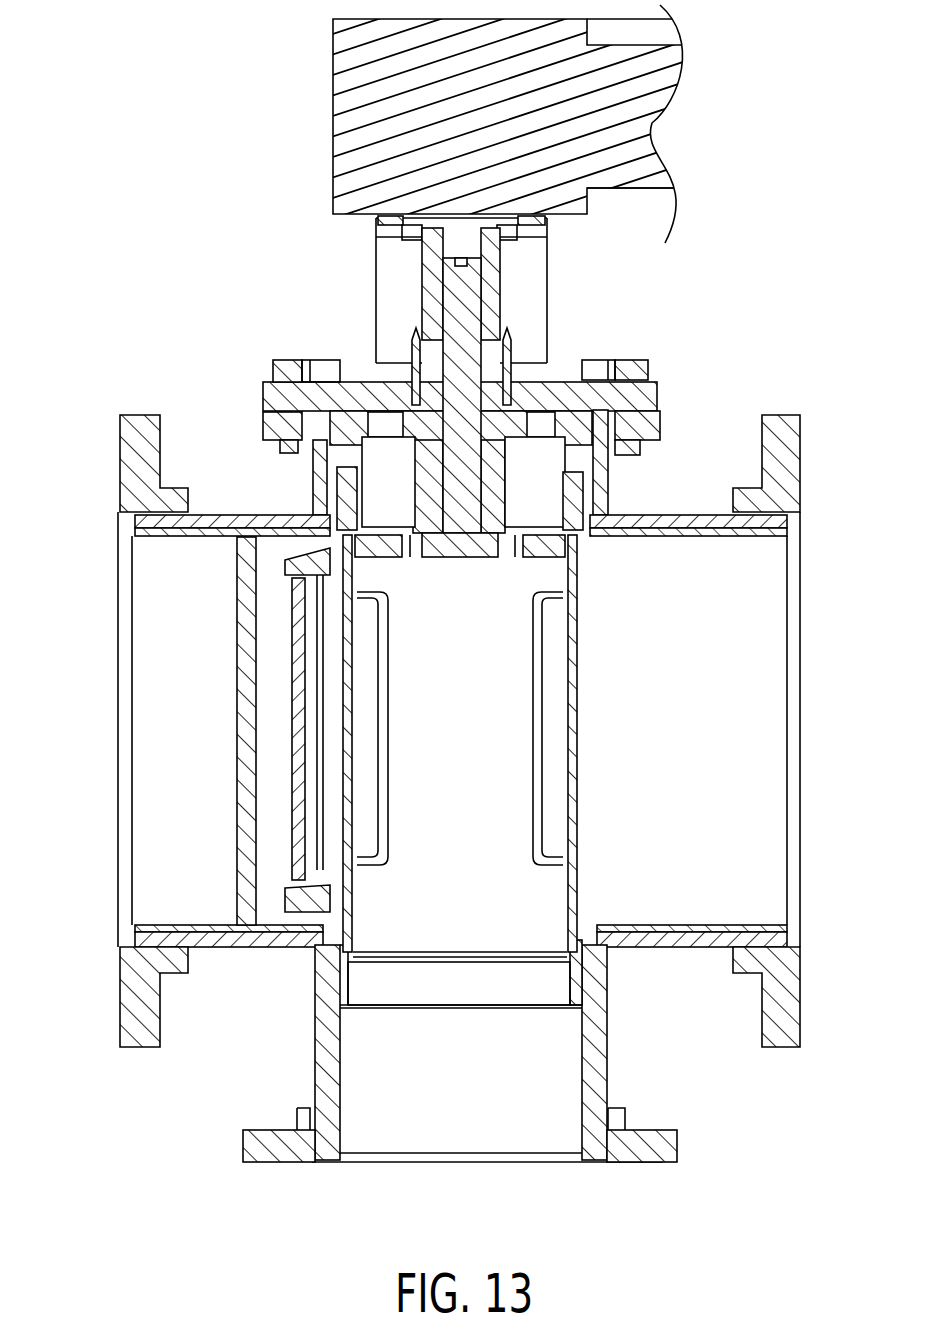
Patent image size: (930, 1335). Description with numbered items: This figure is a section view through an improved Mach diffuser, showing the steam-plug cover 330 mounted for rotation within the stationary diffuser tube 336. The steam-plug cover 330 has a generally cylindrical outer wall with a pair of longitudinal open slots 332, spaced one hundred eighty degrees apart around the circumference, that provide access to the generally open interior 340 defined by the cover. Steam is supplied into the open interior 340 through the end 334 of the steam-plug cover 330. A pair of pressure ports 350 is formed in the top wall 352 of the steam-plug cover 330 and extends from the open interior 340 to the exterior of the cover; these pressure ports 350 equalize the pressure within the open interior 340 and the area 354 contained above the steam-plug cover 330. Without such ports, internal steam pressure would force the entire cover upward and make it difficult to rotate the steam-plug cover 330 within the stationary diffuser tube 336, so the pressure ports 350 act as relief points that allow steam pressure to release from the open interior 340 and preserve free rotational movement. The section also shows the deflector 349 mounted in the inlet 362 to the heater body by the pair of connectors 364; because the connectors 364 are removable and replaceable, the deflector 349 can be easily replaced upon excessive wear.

The steam-plug cover 330 is at (565, 560).
The longitudinal open slots 332 is at (372, 805).
The end 334 is at (478, 962).
The stationary diffuser tube 336 is at (578, 850).
The open interior 340 is at (485, 857).
The deflector 349 is at (237, 620).
The pressure ports 350 is at (397, 562).
The top wall 352 is at (510, 557).
The area 354 is at (545, 473).
The inlet 362 is at (140, 617).
The connectors 364 is at (285, 563).